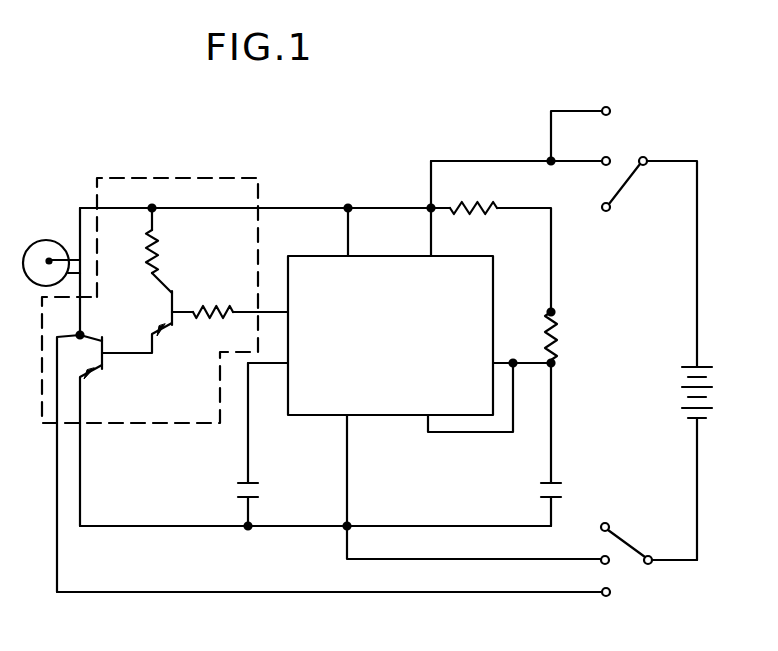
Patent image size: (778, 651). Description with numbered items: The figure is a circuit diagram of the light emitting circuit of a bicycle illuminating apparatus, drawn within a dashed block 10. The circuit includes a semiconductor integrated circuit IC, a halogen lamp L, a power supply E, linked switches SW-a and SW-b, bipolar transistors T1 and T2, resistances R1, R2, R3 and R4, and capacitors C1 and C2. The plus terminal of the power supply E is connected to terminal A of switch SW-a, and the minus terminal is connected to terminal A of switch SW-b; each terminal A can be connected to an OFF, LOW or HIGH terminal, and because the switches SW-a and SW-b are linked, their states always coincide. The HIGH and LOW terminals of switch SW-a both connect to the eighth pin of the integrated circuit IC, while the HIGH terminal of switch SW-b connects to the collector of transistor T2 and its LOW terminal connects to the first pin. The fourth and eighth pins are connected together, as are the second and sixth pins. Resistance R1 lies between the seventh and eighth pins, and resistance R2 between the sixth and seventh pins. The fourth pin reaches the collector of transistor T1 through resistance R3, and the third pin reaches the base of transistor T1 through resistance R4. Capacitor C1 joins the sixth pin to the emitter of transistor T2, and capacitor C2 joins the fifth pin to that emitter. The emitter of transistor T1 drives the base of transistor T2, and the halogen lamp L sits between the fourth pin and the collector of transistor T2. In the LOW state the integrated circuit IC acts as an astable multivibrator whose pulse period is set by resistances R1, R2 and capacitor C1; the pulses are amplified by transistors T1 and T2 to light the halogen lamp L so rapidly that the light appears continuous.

The oscillator/driver circuit block 10 is at (217, 180).
The halogen lamp L is at (51, 249).
The resistance R1 is at (500, 243).
The resistance R2 is at (574, 396).
The resistance R3 is at (155, 240).
The resistance R4 is at (230, 313).
The capacitor C1 is at (511, 494).
The capacitor C2 is at (227, 444).
The bipolar transistor T1 is at (146, 328).
The bipolar transistor T2 is at (67, 451).
The semiconductor integrated circuit IC is at (424, 360).
The power supply E is at (710, 448).
The switch SW-a is at (564, 222).
The switch SW-b is at (377, 561).